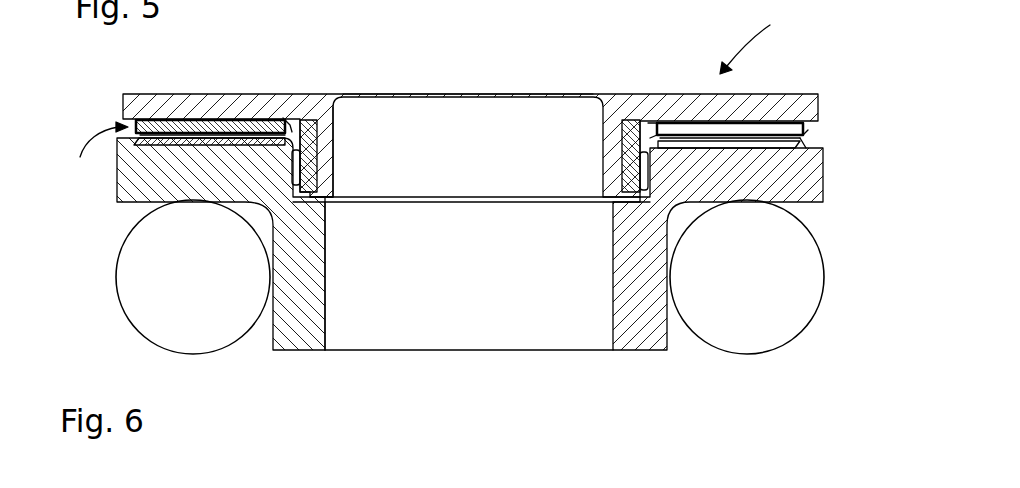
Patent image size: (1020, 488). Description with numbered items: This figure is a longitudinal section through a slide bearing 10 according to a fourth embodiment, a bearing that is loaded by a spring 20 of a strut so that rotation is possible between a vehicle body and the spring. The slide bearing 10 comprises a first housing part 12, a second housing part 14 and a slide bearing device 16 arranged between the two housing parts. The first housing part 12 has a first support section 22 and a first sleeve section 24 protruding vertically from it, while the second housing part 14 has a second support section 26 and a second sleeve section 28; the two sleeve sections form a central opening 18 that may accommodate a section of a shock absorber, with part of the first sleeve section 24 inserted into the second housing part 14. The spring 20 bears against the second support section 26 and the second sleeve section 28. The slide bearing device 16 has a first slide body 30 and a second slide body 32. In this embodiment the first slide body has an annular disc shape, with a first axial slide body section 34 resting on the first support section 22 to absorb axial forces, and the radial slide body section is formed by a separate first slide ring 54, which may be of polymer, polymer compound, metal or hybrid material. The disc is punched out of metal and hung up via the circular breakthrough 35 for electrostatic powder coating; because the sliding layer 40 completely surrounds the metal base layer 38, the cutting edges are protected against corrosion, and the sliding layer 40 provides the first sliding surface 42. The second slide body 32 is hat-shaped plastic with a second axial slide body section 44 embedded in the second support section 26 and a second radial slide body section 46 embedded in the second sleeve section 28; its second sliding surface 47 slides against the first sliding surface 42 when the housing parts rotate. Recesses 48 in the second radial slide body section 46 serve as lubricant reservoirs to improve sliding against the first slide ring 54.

The slide bearing 10 is at (765, 39).
The first housing part 12 is at (165, 105).
The second housing part 14 is at (312, 345).
The slide bearing device 16 is at (91, 162).
The central opening 18 is at (604, 328).
The spring 20 is at (768, 335).
The first support section 22 is at (232, 112).
The first sleeve section 24 is at (325, 137).
The second support section 26 is at (137, 185).
The second sleeve section 28 is at (313, 257).
The first slide body 30 is at (217, 122).
The second slide body 32 is at (310, 118).
The first axial slide body section 34 is at (685, 128).
The circular breakthrough 35 is at (650, 128).
The base layer 38 is at (786, 128).
The sliding layer 40 is at (803, 130).
The first sliding surface 42 is at (150, 120).
The second axial slide body section 44 is at (715, 128).
The second radial slide body section 46 is at (655, 165).
The second sliding surface 47 is at (792, 138).
The recesses 48 is at (283, 118).
The first slide ring 54 is at (625, 157).